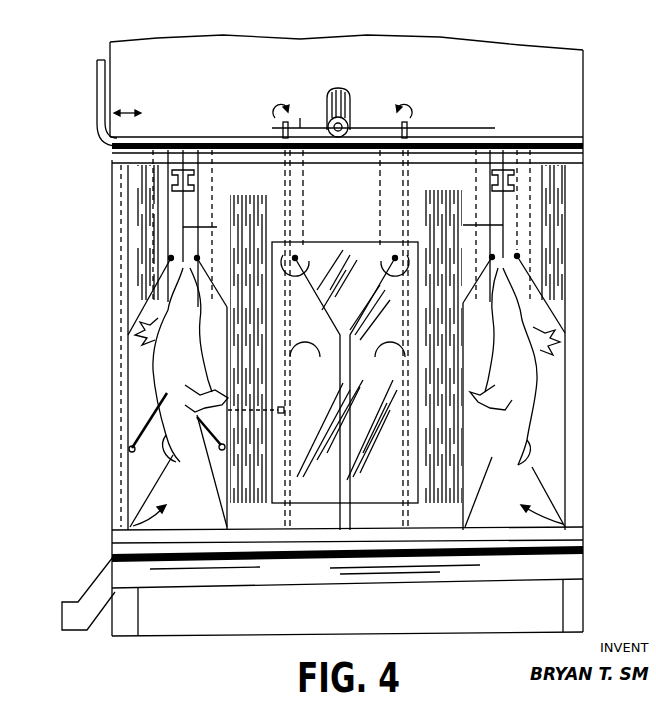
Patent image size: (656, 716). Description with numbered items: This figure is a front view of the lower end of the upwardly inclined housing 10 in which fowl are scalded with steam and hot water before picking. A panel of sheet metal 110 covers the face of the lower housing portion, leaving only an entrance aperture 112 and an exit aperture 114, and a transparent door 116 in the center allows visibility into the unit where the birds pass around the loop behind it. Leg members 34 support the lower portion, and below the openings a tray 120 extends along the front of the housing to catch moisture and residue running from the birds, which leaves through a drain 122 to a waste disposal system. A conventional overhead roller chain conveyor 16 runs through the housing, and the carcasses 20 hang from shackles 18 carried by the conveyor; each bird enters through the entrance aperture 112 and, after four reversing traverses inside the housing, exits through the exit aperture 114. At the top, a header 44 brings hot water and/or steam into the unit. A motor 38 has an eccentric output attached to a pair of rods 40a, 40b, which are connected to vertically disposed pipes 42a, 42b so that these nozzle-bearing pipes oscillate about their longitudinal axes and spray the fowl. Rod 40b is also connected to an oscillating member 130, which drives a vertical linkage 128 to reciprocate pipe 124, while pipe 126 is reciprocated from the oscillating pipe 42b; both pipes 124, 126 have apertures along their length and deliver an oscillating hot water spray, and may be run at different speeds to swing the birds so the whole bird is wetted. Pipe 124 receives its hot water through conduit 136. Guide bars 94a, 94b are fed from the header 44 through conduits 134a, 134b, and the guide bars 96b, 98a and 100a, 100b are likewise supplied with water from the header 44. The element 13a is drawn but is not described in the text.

The housing 10 is at (600, 81).
The header 44 is at (97, 110).
The oscillating member 130 is at (122, 130).
The overhead roller chain conveyor 16 is at (184, 168).
The motor 38 is at (337, 88).
The rod 40a is at (367, 124).
The rod 40b is at (303, 124).
The pipe 42a is at (408, 130).
The pipe 42b is at (284, 130).
The panel of sheet metal 110 is at (350, 193).
The transparent door 116 is at (357, 306).
The guide bar 96b is at (305, 256).
The guide bar 98a is at (393, 258).
The conduit 134a is at (138, 204).
The conduit 134b is at (229, 173).
The conduit 136 is at (112, 287).
The vertical linkage 128 is at (124, 317).
The shackle 18 is at (224, 222).
The guide bar 94a is at (170, 260).
The guide bar 94b is at (199, 260).
The guide bar 100a is at (490, 259).
The guide bar 100b is at (518, 258).
The animal carcass 20 is at (347, 471).
The pipe 124 is at (130, 452).
The guide rod 13a is at (240, 429).
The pipe 126 is at (226, 449).
The entrance aperture 112 is at (130, 531).
The exit aperture 114 is at (568, 529).
The tray 120 is at (369, 575).
The leg member 34 is at (138, 610).
The drain 122 is at (62, 618).